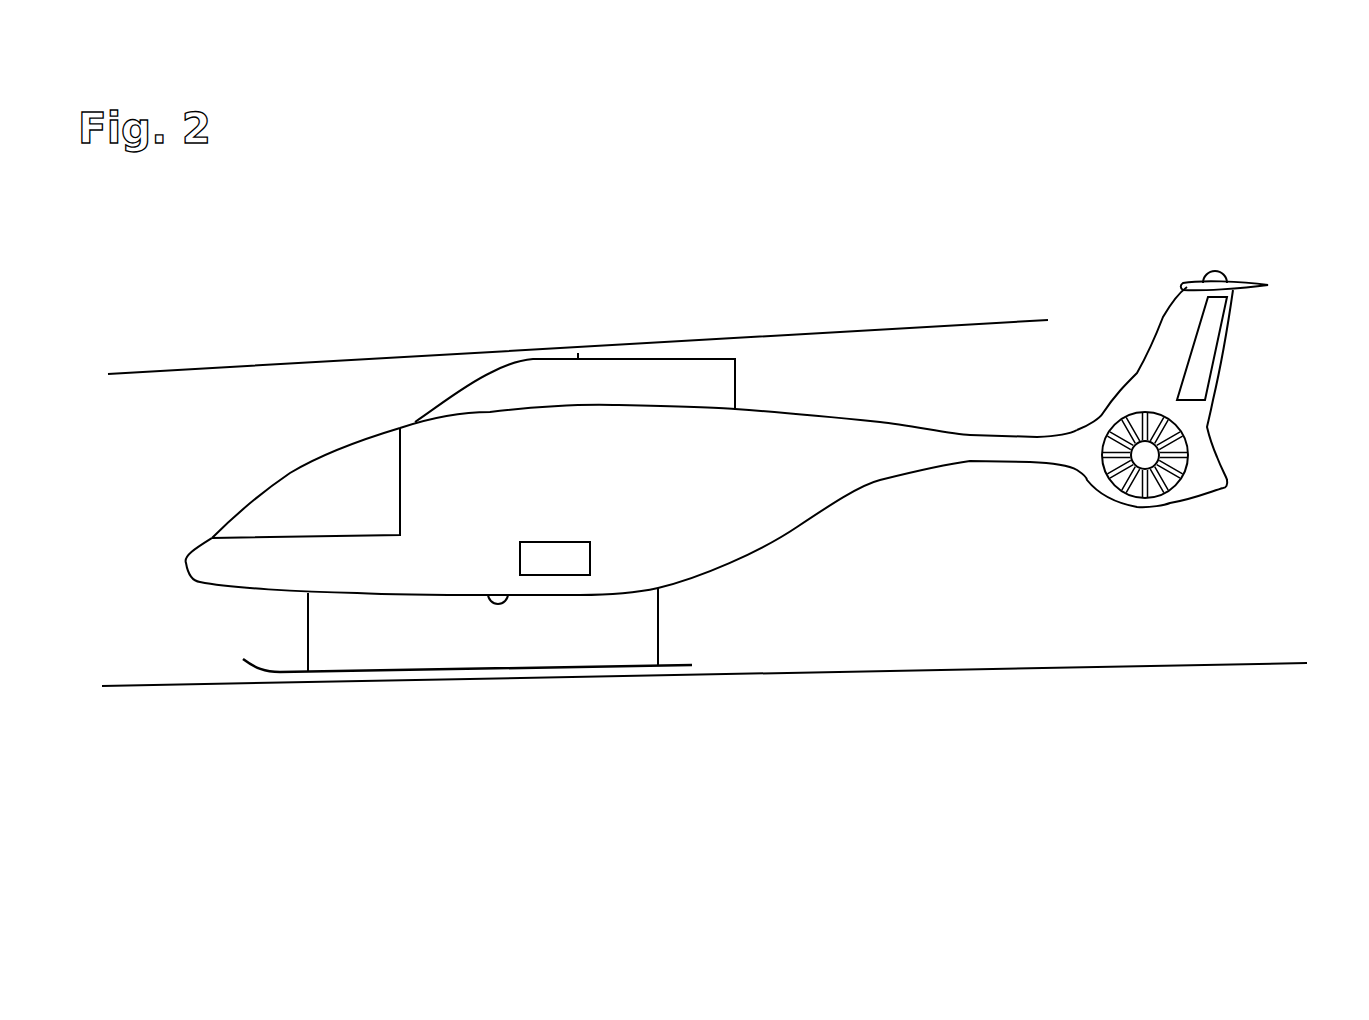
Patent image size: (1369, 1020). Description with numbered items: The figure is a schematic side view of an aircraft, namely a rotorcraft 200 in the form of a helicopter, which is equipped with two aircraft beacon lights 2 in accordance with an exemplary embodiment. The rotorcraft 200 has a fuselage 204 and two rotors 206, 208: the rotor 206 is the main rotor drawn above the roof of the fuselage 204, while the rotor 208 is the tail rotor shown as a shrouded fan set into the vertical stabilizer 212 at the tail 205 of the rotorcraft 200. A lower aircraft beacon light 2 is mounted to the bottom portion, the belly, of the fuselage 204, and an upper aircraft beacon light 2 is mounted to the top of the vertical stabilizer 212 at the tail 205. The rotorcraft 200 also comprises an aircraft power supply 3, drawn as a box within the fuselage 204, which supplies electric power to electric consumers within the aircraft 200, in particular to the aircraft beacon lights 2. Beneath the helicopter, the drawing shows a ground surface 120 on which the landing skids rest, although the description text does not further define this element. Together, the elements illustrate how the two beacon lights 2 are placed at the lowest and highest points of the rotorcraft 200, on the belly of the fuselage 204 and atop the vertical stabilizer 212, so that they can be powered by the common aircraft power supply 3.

The rotorcraft 200 is at (390, 307).
The rotor 206 is at (996, 292).
The vertical stabilizer 212 is at (1152, 314).
The aircraft beacon light 2 is at (1210, 251).
The tail 205 is at (1236, 363).
The rotor 208 is at (1186, 501).
The aircraft power supply 3 is at (552, 557).
The fuselage 204 is at (632, 555).
The ground surface 120 is at (987, 668).